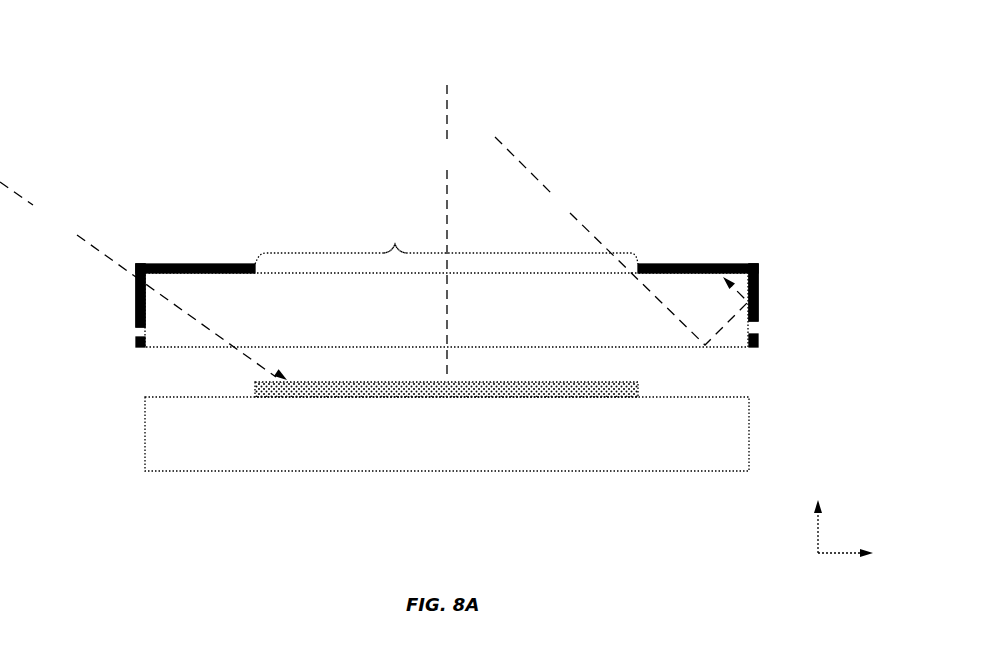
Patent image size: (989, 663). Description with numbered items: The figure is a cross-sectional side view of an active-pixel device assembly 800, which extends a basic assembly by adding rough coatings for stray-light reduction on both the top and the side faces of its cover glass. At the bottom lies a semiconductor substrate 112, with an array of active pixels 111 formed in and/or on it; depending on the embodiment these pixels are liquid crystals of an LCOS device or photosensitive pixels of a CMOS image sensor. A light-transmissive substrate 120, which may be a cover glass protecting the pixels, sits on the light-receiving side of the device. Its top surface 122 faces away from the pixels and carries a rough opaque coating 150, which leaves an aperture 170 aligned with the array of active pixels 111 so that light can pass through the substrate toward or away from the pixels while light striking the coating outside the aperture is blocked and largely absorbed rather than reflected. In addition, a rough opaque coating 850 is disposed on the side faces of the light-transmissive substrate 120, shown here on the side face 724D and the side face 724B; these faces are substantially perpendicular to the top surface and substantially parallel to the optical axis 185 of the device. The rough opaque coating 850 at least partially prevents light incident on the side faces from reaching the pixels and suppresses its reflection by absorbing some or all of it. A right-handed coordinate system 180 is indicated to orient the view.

The active-pixel device assembly 800 is at (164, 58).
The rough opaque coating 150 is at (229, 262).
The rough opaque coating 850 is at (136, 307).
The side face 724D is at (135, 333).
The side face 724B is at (768, 328).
The top surface 122 is at (300, 262).
The aperture 170 is at (397, 233).
The light-transmissive substrate 120 is at (413, 335).
The array of active pixels 111 is at (255, 392).
The semiconductor substrate 112 is at (464, 460).
The optical axis 185 is at (445, 232).
The right-handed coordinate system 180 is at (838, 598).